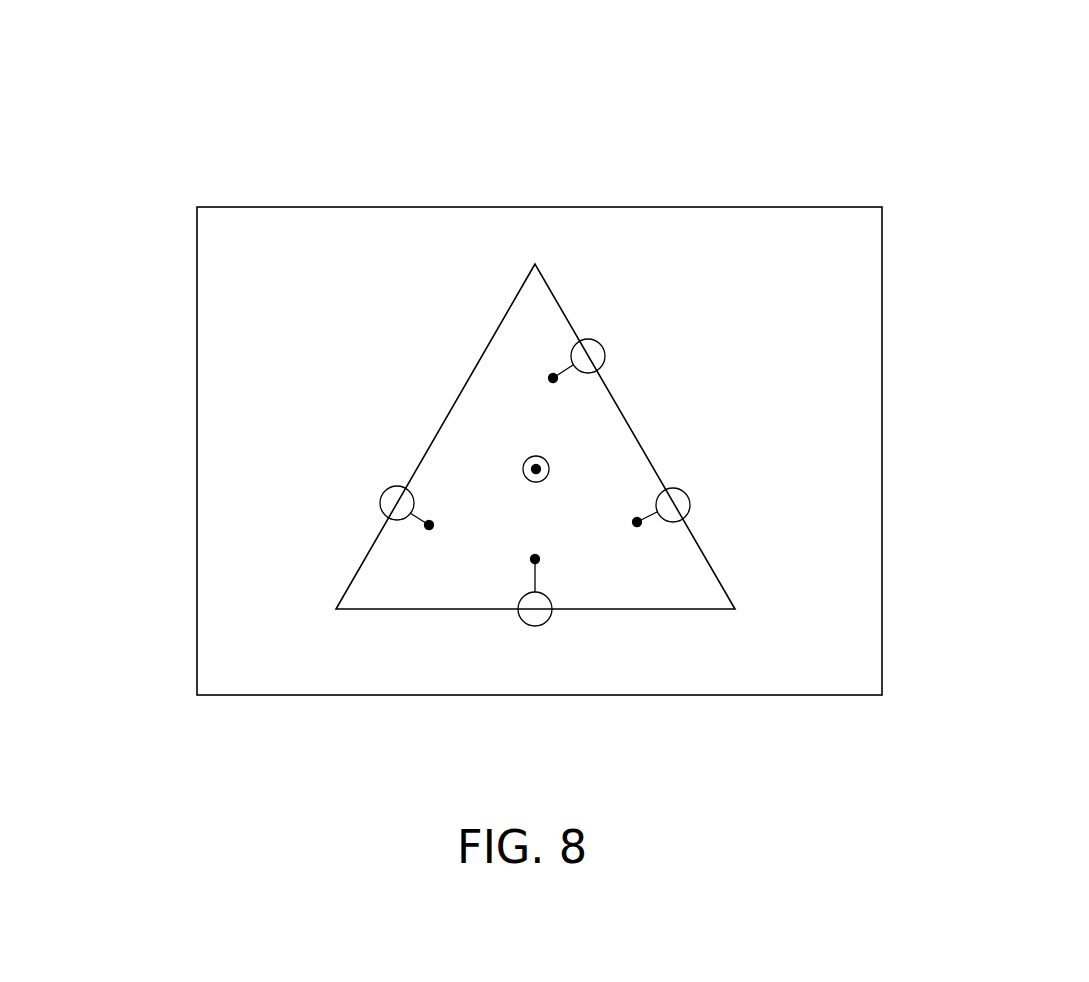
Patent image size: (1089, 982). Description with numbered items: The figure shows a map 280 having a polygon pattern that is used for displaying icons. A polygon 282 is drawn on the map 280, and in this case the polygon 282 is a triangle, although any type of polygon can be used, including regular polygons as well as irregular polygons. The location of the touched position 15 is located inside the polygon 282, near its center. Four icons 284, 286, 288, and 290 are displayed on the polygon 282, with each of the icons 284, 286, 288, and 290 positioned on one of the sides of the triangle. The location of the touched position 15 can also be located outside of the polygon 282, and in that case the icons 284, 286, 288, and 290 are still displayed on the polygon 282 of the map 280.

The map 280 is at (928, 118).
The polygon 282 is at (638, 438).
The touched position 15 is at (526, 461).
The icon 284 is at (605, 355).
The icon 286 is at (689, 510).
The icon 288 is at (535, 626).
The icon 290 is at (383, 494).